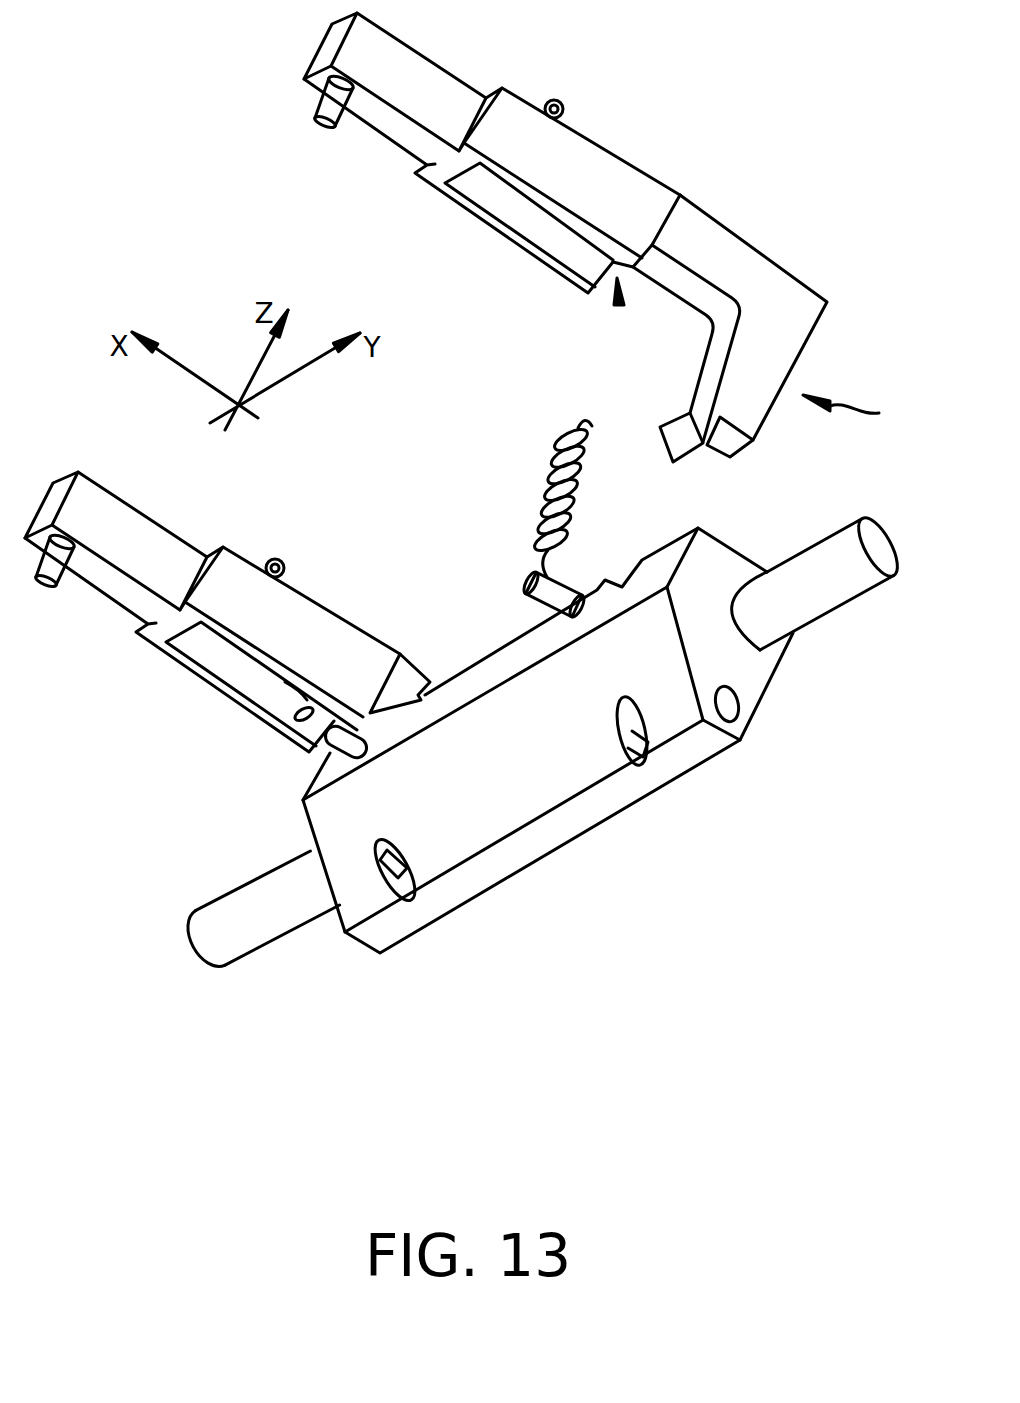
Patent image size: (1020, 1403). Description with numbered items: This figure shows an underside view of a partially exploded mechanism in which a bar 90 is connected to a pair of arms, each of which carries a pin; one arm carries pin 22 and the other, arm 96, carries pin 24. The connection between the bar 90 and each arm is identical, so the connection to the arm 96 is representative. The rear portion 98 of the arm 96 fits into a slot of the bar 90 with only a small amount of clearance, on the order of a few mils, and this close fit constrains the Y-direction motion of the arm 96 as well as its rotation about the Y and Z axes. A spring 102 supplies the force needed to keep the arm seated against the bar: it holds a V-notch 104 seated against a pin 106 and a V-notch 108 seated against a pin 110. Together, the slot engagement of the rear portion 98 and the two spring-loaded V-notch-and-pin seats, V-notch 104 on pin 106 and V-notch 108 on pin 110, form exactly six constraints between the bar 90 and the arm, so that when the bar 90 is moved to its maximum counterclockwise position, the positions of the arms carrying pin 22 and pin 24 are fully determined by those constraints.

The pin 22 is at (48, 593).
The pin 24 is at (318, 103).
The bar 90 is at (530, 850).
The arm 96 is at (740, 237).
The rear portion 98 is at (857, 413).
The spring 102 is at (550, 467).
The V-notch 104 is at (743, 466).
The pin 106 is at (403, 890).
The V-notch 108 is at (619, 305).
The pin 110 is at (513, 582).